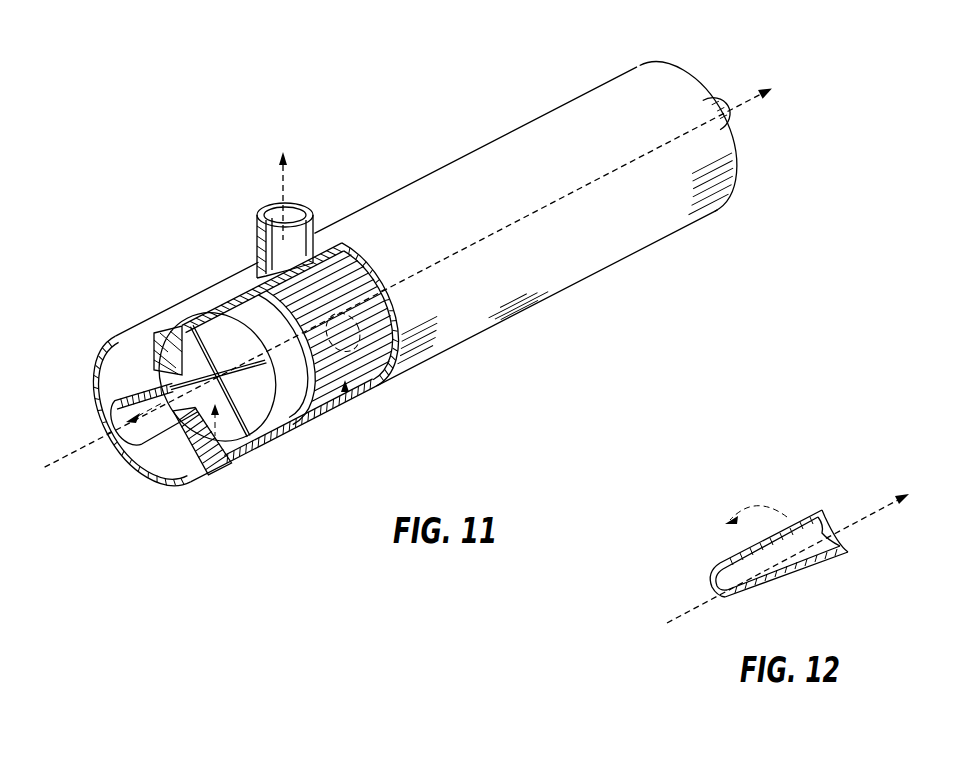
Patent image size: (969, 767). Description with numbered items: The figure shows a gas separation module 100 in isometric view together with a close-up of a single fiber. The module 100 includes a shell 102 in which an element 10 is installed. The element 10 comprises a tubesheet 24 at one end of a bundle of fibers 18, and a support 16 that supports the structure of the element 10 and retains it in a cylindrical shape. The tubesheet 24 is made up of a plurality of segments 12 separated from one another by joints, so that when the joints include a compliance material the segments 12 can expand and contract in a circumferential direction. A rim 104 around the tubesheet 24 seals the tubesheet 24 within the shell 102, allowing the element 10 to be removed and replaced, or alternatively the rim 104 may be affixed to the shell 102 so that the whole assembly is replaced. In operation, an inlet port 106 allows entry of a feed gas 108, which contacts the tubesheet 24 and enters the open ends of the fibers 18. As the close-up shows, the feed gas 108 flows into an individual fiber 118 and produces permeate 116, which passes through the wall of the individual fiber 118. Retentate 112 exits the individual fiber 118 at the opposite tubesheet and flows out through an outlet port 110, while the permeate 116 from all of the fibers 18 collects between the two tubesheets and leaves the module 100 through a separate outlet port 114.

In FIG. 11, the gas separation module 100 is at (412, 282).
In FIG. 11, the shell 102 is at (470, 153).
In FIG. 11, the outlet port 110 is at (713, 98).
In FIG. 11, the retentate 112 is at (743, 107).
In FIG. 12, the retentate 112 is at (870, 515).
In FIG. 11, the permeate 116 is at (280, 186).
In FIG. 12, the permeate 116 is at (775, 512).
In FIG. 11, the outlet port 114 is at (313, 227).
In FIG. 11, the support 16 is at (212, 348).
In FIG. 11, the segments 12 is at (397, 300).
In FIG. 11, the feed gas 108 is at (72, 447).
In FIG. 12, the feed gas 108 is at (693, 607).
In FIG. 11, the inlet port 106 is at (135, 433).
In FIG. 11, the element 10 is at (197, 462).
In FIG. 11, the tubesheet 24 is at (267, 443).
In FIG. 11, the rim 104 is at (292, 400).
In FIG. 11, the fibers 18 is at (347, 392).
In FIG. 12, the individual fiber 118 is at (800, 574).